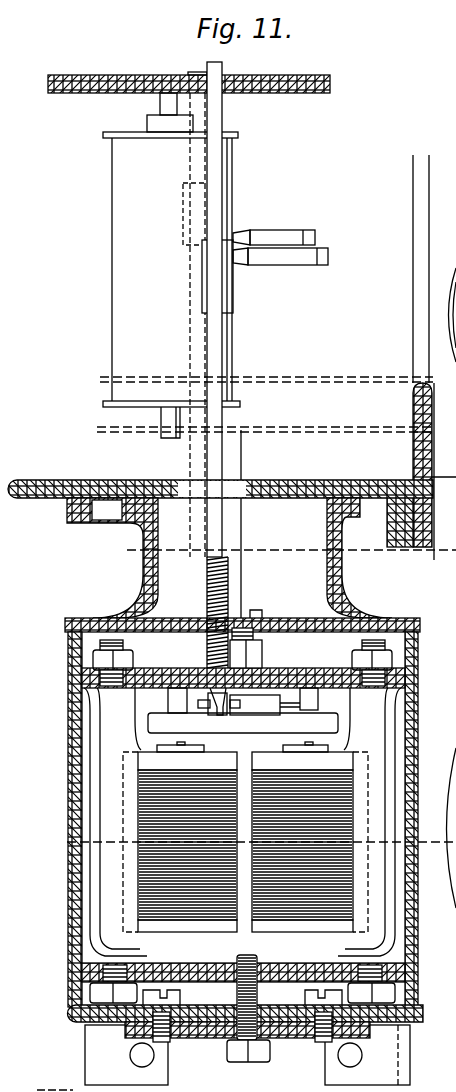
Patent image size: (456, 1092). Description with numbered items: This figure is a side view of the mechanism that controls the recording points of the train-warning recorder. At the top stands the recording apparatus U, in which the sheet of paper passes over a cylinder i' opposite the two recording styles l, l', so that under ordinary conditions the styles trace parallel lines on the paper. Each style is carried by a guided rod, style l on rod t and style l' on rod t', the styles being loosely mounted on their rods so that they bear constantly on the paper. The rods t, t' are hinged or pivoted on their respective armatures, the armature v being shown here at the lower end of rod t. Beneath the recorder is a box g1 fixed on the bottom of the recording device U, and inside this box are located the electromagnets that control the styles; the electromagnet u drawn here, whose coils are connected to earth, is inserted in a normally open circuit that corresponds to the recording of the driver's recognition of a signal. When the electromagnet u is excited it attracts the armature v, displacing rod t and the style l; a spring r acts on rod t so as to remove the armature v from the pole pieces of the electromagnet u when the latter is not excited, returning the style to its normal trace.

The cylinder i' is at (171, 265).
The recording style l' is at (286, 234).
The recording style l is at (287, 257).
The recording apparatus U is at (230, 396).
The rod t' is at (180, 325).
The rod t is at (228, 309).
The spring r is at (230, 597).
The box g1 is at (418, 717).
The armature v is at (243, 724).
The electromagnet u is at (245, 837).